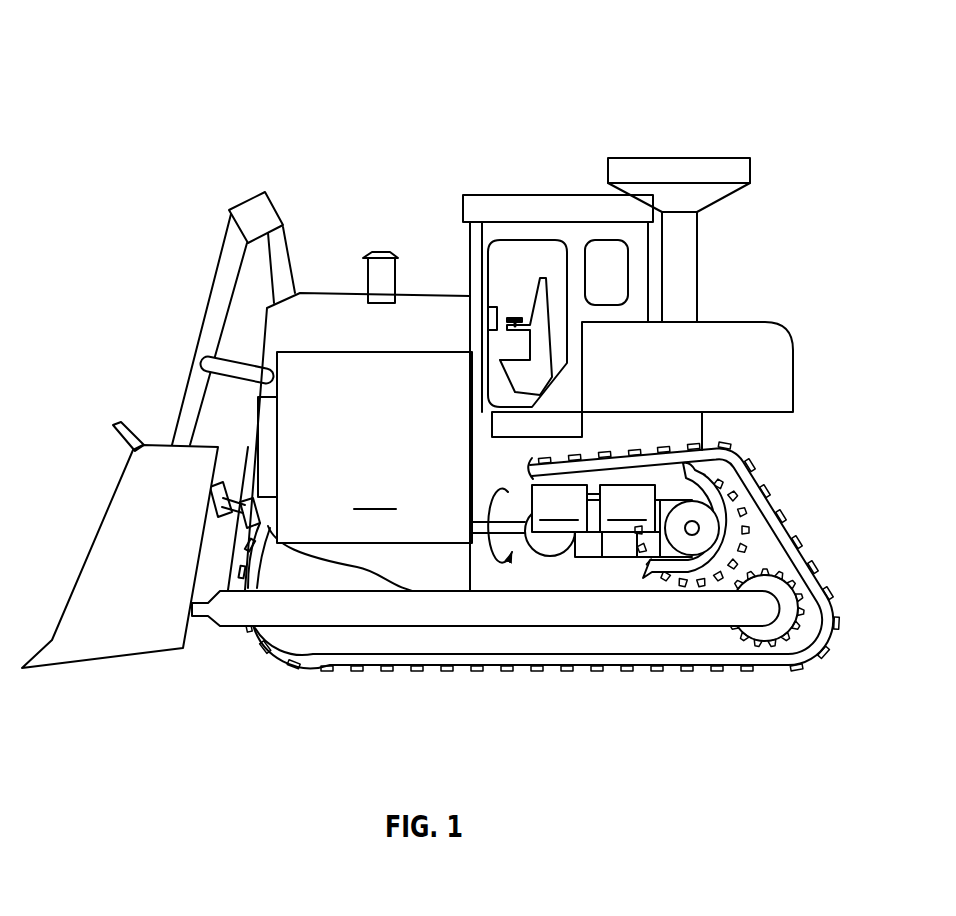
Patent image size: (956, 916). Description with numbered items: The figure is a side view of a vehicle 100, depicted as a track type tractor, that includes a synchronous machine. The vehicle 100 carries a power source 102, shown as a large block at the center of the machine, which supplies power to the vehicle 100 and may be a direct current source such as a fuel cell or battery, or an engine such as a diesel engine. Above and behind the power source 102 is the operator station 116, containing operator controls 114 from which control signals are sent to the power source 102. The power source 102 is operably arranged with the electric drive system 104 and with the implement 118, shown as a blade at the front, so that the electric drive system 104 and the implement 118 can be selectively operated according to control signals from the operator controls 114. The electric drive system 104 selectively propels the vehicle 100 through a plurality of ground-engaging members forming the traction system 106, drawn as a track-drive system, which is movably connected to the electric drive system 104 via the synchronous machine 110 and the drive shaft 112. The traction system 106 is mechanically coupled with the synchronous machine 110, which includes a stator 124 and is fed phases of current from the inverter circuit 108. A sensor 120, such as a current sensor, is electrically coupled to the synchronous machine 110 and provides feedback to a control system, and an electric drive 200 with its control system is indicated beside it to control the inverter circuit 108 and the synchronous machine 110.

The vehicle 100 is at (160, 48).
The power source 102 is at (374, 447).
The electric drive system 104 is at (610, 562).
The traction system 106 is at (778, 510).
The inverter circuit 108 is at (260, 432).
The synchronous machine 110 is at (543, 543).
The drive shaft 112 is at (488, 542).
The operator controls 114 is at (485, 320).
The operator station 116 is at (532, 237).
The implement 118 is at (108, 492).
The sensor 120 is at (559, 508).
The stator 124 is at (617, 656).
The electric drive 200 is at (627, 508).